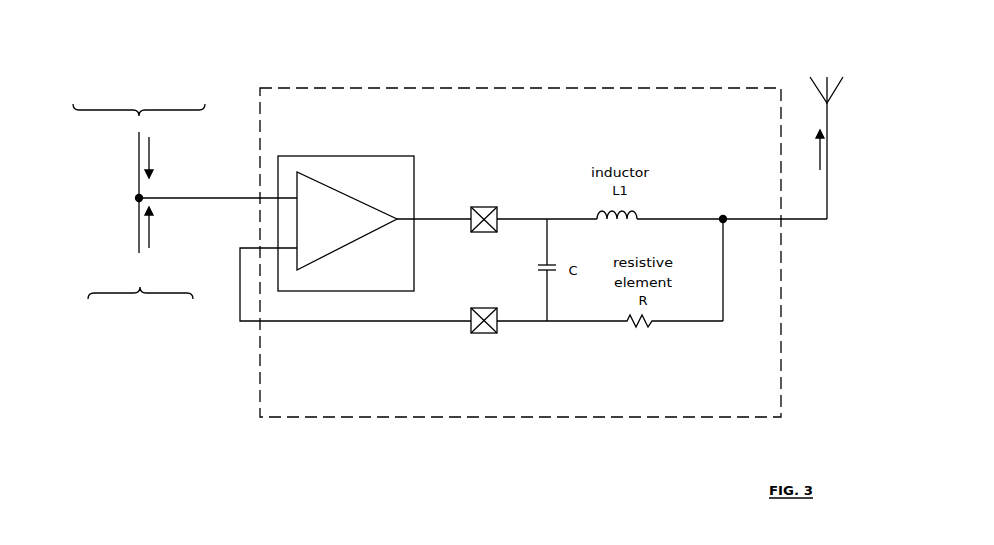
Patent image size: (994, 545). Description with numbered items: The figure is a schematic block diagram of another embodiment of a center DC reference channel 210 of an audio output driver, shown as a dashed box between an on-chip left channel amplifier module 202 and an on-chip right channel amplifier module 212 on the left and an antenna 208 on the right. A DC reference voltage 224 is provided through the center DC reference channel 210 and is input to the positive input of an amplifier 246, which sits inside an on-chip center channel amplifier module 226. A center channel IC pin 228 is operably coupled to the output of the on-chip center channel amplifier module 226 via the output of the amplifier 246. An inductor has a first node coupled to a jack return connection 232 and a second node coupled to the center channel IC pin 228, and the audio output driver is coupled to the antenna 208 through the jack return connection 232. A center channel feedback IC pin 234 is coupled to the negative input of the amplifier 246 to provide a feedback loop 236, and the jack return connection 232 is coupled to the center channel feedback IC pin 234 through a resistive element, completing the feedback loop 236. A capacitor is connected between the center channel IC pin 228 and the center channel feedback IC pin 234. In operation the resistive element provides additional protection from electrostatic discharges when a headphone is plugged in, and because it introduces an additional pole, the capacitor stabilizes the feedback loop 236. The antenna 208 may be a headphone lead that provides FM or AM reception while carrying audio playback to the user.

The on-chip left channel amplifier module 202 is at (139, 121).
The on-chip right channel amplifier module 212 is at (140, 288).
The DC reference voltage 224 is at (137, 197).
The center DC reference channel 210 is at (520, 240).
The on-chip center channel amplifier module 226 is at (347, 202).
The amplifier 246 is at (347, 221).
The center channel IC pin 228 is at (486, 207).
The feedback loop 236 is at (481, 287).
The center channel feedback IC pin 234 is at (483, 333).
The jack return connection 232 is at (723, 250).
The antenna 208 is at (827, 167).